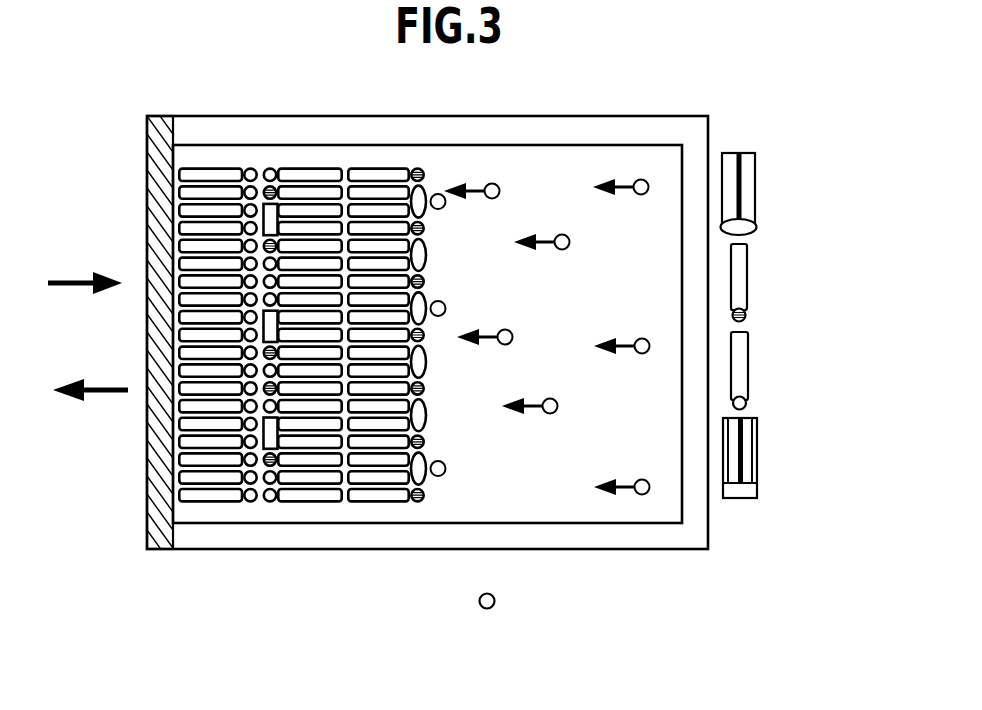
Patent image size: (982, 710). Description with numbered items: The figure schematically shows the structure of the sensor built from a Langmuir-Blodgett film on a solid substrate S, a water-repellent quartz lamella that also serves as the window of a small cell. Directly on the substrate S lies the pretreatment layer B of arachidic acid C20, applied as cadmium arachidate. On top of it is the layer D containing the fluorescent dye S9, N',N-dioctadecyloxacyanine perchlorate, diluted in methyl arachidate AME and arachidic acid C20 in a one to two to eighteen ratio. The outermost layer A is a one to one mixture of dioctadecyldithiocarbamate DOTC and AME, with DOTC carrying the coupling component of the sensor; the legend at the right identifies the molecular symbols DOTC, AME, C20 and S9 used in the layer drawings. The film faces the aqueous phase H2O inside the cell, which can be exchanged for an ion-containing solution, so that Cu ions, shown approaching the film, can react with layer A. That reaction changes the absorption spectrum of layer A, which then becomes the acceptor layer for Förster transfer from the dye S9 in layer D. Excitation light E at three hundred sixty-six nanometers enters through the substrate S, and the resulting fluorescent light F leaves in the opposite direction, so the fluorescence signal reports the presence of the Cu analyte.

The solid substrate S is at (160, 357).
The pretreatment layer of arachidic acid B is at (217, 401).
The layer (D) containing the fluorescent dye D is at (303, 401).
The layer (A) containing the coupling component A is at (387, 401).
The excitation light E is at (85, 270).
The fluorescent light F is at (90, 376).
The dioctadecyldithiocarbamate DOTC is at (775, 194).
The methyl arachidate AME is at (772, 283).
The arachidic acid C20 is at (766, 371).
The N',N-dioctadecyloxacyanine perchlorate S9 is at (755, 458).
The Cu2+ ions Cu is at (519, 602).
The aqueous phase H2O is at (529, 462).